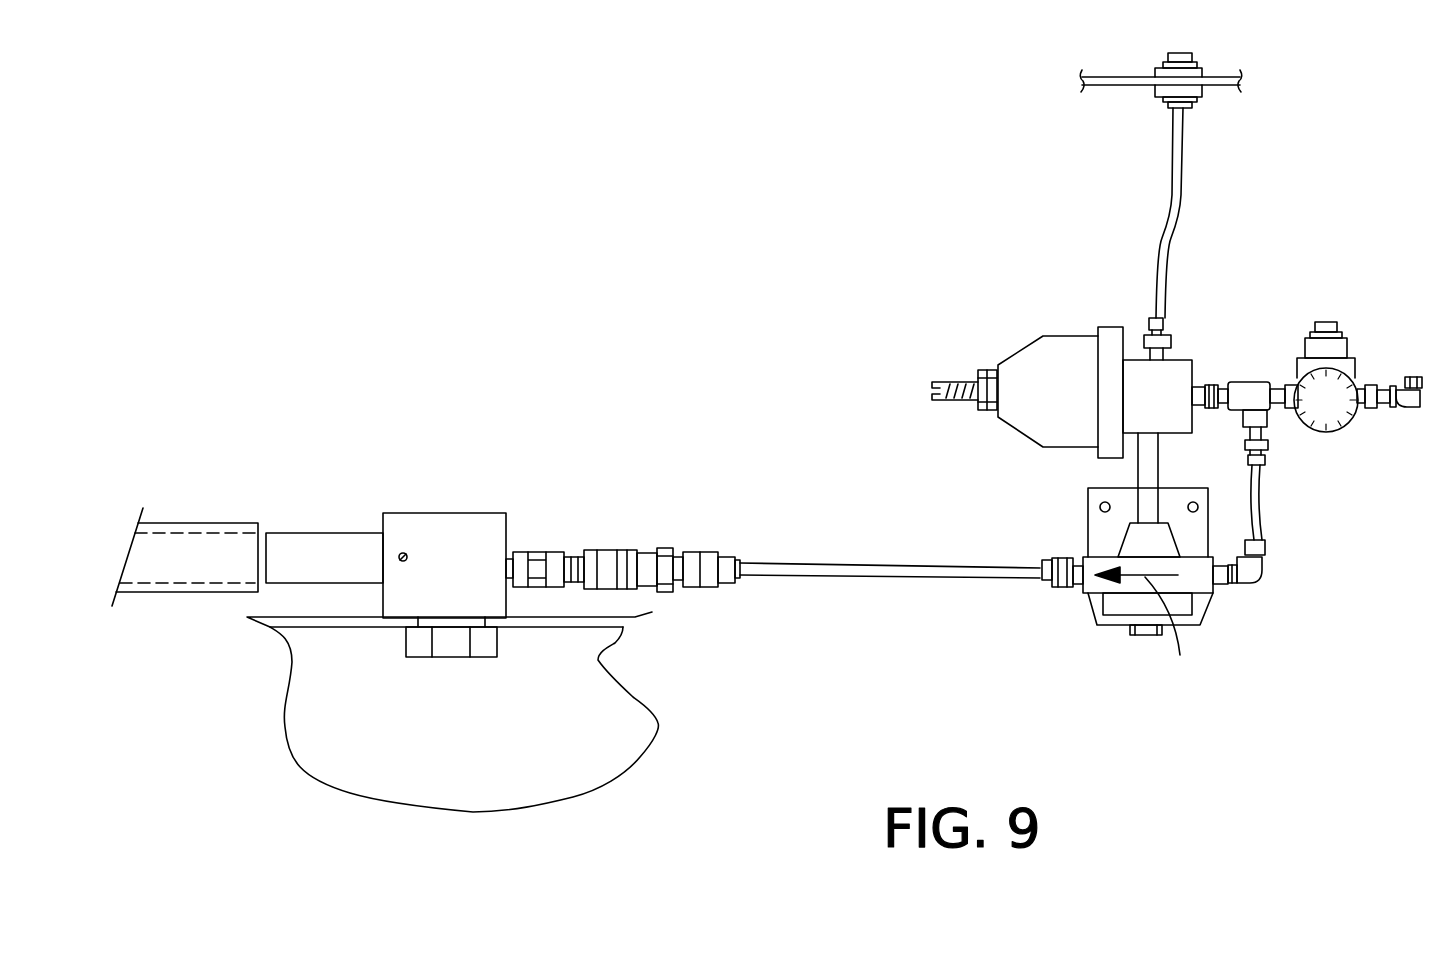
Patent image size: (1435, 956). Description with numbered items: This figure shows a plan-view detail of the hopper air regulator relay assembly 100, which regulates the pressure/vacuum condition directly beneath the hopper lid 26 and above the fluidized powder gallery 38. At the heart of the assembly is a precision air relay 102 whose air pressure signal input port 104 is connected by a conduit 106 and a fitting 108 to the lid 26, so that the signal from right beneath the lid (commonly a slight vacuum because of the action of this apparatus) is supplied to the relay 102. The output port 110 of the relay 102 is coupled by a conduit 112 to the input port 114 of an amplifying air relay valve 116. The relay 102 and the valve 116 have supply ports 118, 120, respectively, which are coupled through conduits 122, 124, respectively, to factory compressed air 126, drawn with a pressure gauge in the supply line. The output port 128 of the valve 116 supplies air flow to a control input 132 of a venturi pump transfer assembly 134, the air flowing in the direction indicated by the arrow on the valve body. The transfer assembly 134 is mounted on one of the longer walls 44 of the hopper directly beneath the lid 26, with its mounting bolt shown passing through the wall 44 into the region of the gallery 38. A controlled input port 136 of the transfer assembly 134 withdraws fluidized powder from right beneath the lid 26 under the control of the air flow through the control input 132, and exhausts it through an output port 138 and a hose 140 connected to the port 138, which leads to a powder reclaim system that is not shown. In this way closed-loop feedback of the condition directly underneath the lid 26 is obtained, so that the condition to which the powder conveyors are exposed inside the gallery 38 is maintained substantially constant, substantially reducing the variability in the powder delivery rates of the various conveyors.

The hopper lid 26 is at (1135, 87).
The fluidized powder gallery 38 is at (452, 769).
The longer wall 44 is at (559, 630).
The air regulator relay assembly 100 is at (1171, 405).
The precision air relay 102 is at (1035, 425).
The air pressure signal input port 104 is at (1170, 322).
The conduit 106 is at (1172, 218).
The fitting 108 is at (1228, 75).
The output port 110 is at (1140, 434).
The conduit 112 is at (1143, 512).
The input port 114 is at (1155, 522).
The amplifying air relay valve 116 is at (1118, 623).
The supply port 118 is at (1212, 385).
The supply port 120 is at (1230, 588).
The conduit 122 is at (1228, 386).
The conduit 124 is at (1258, 530).
The factory compressed air 126 is at (1410, 376).
The output port 128 is at (1063, 585).
The control input 132 is at (510, 553).
The venturi pump transfer assembly 134 is at (445, 523).
The controlled input port 136 is at (449, 678).
The output port 138 is at (266, 537).
The hose 140 is at (190, 550).